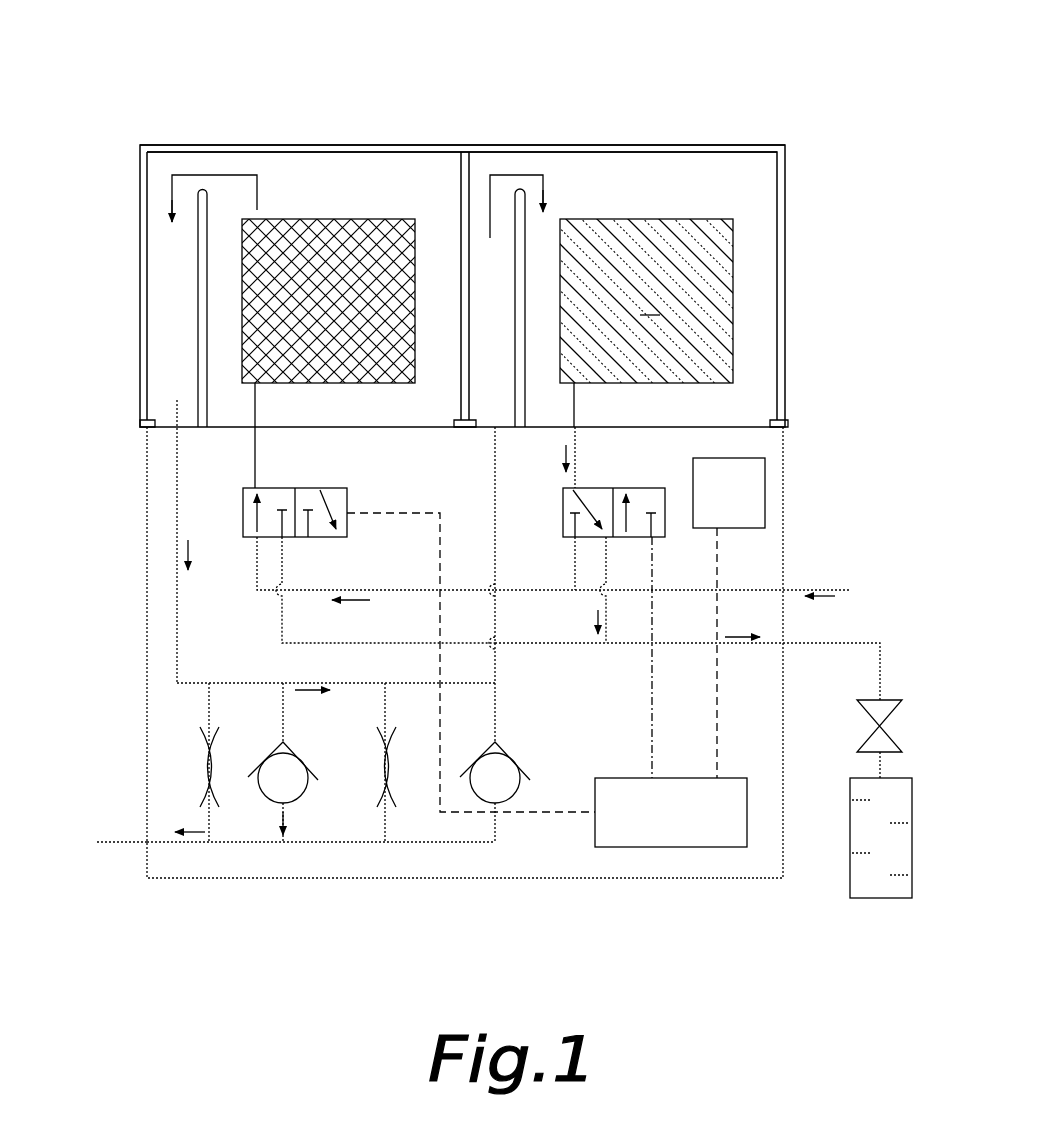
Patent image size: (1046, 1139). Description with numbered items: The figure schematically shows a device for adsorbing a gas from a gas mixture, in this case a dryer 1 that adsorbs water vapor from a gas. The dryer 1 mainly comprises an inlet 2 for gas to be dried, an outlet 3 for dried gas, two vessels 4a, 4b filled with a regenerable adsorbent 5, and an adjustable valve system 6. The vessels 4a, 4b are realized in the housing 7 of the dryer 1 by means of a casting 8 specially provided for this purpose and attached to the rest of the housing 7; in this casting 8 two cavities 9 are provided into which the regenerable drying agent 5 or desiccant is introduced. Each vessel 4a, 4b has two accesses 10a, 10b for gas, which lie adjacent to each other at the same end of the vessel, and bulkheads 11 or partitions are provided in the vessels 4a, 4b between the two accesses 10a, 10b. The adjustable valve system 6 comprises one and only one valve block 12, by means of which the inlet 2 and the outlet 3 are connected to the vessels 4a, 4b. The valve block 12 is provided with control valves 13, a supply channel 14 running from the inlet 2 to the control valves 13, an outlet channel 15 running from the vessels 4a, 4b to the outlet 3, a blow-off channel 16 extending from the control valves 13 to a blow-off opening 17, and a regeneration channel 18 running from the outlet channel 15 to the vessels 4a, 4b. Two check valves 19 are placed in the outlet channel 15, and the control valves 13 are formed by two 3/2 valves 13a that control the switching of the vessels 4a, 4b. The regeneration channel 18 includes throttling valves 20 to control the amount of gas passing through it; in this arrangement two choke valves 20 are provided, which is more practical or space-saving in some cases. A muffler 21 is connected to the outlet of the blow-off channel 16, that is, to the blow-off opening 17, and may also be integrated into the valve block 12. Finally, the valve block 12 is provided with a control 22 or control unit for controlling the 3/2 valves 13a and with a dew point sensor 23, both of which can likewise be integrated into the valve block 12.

The dryer 1 is at (131, 136).
The inlet 2 is at (837, 583).
The outlet 3 is at (118, 842).
The vessel 4a is at (392, 62).
The vessel 4b is at (556, 66).
The regenerable adsorbent 5 is at (338, 312).
The adjustable valve system 6 is at (125, 592).
The housing 7 is at (147, 475).
The casting 8 is at (145, 298).
The cavities 9 is at (622, 168).
The access 10a is at (172, 422).
The access 10b is at (253, 427).
The bulkhead 11 is at (200, 268).
The valve block 12 is at (147, 645).
The control valves 13 is at (320, 537).
The 3/2 valve 13a is at (243, 497).
The supply channel 14 is at (755, 590).
The outlet channel 15 is at (235, 842).
The blow-off channel 16 is at (758, 642).
The blow-off opening 17 is at (888, 715).
The regeneration channel 18 is at (435, 683).
The check valve 19 is at (298, 778).
The throttling valve 20 is at (205, 740).
The muffler 21 is at (880, 898).
The control 22 is at (663, 832).
The dew point sensor 23 is at (748, 480).